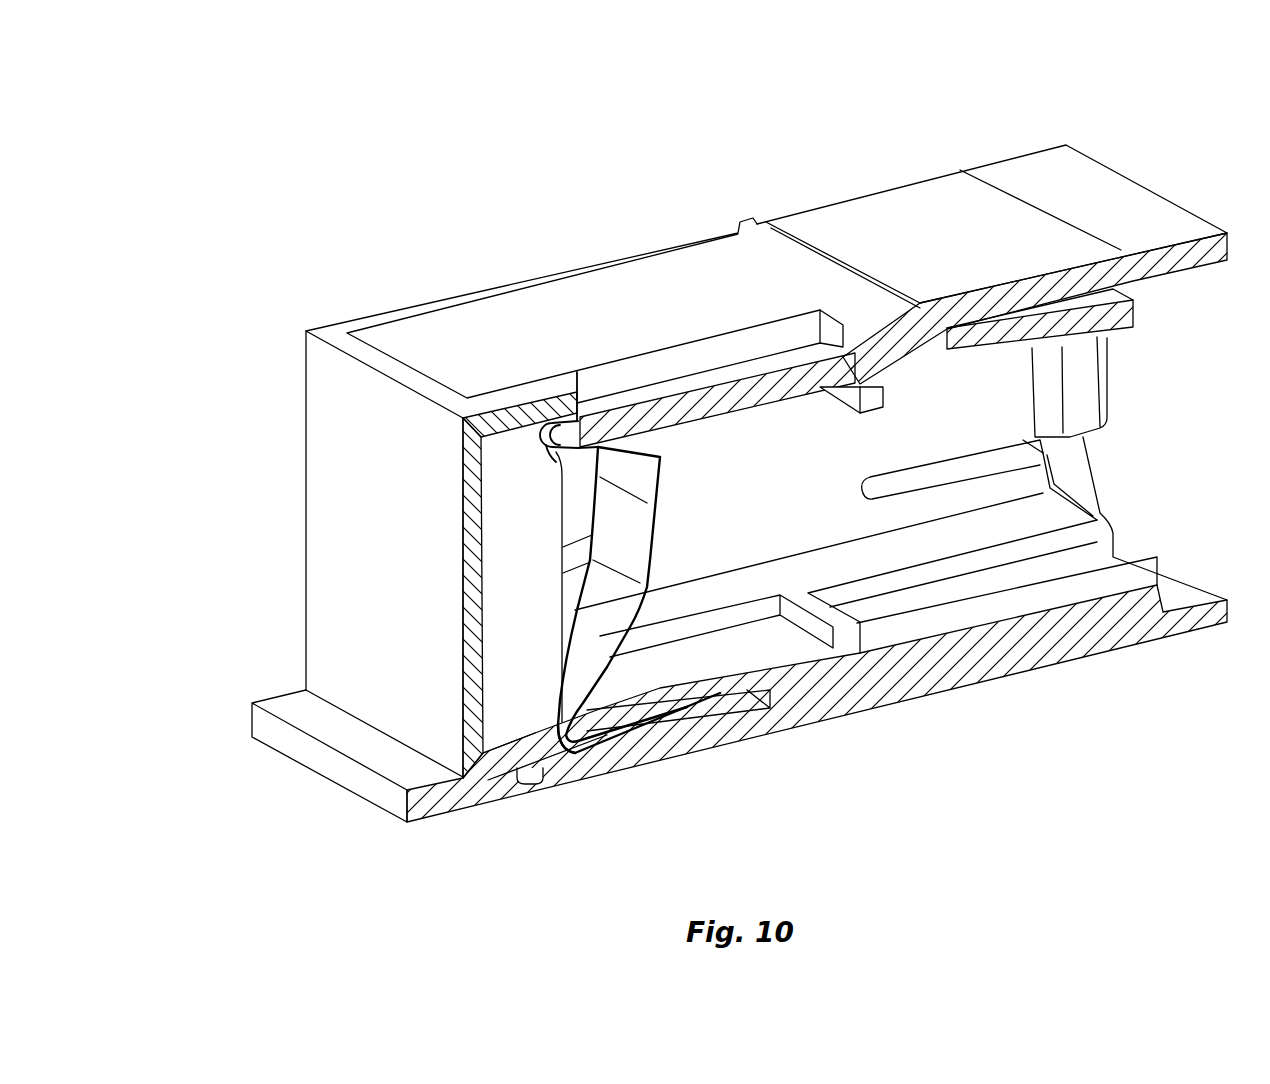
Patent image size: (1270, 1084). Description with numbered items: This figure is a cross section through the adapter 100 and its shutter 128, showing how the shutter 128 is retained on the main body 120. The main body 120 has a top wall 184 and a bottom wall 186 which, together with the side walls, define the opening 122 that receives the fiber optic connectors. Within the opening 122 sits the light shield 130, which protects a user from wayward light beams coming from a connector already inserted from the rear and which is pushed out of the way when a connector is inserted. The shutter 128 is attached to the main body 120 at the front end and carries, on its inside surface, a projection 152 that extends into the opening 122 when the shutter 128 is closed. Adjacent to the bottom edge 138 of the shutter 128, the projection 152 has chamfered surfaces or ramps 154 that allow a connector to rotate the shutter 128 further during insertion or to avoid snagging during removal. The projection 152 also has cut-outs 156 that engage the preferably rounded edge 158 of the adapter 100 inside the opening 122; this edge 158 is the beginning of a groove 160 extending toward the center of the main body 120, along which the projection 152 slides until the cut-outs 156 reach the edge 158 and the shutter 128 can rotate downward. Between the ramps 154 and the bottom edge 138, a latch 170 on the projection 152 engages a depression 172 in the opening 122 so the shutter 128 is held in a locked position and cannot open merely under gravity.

The adapter 100 is at (1103, 135).
The main body 120 is at (1162, 180).
The opening 122 is at (1110, 490).
The shutter 128 is at (287, 517).
The light shield 130 is at (648, 527).
The bottom edge 138 is at (363, 800).
The projection 152 is at (506, 602).
The chamfered surfaces or ramps 154 is at (556, 717).
The cut-outs 156 is at (540, 457).
The edge 158 is at (577, 400).
The groove 160 is at (663, 370).
The latch 170 is at (547, 787).
The depression 172 is at (523, 790).
The top wall 184 is at (715, 273).
The bottom wall 186 is at (915, 700).